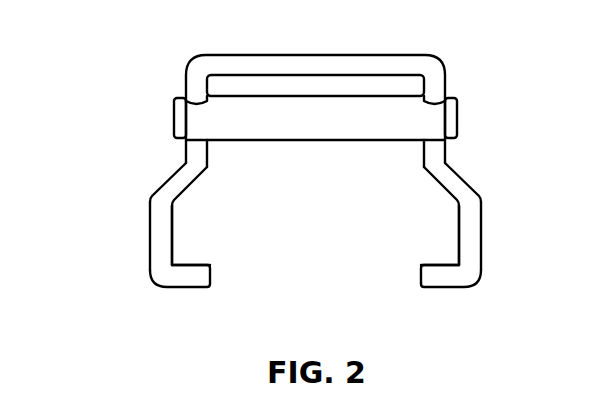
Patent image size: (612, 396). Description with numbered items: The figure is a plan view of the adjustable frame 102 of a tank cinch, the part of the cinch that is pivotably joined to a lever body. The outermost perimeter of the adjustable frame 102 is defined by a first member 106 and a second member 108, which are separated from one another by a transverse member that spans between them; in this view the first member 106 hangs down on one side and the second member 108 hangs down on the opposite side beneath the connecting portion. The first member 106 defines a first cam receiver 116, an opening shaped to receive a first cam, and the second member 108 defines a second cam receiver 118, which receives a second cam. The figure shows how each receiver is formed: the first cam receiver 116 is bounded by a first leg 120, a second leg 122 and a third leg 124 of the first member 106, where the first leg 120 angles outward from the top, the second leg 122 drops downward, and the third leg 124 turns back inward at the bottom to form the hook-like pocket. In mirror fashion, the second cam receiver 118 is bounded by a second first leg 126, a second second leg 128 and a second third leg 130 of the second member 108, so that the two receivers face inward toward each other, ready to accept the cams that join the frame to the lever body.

The adjustable frame 102 is at (288, 188).
The first member 106 is at (184, 140).
The second member 108 is at (446, 147).
The first cam receiver 116 is at (183, 253).
The second cam receiver 118 is at (440, 238).
The first leg 120 is at (163, 182).
The second leg 122 is at (150, 230).
The third leg 124 is at (185, 288).
The second first leg 126 is at (468, 185).
The second second leg 128 is at (482, 237).
The second third leg 130 is at (443, 288).